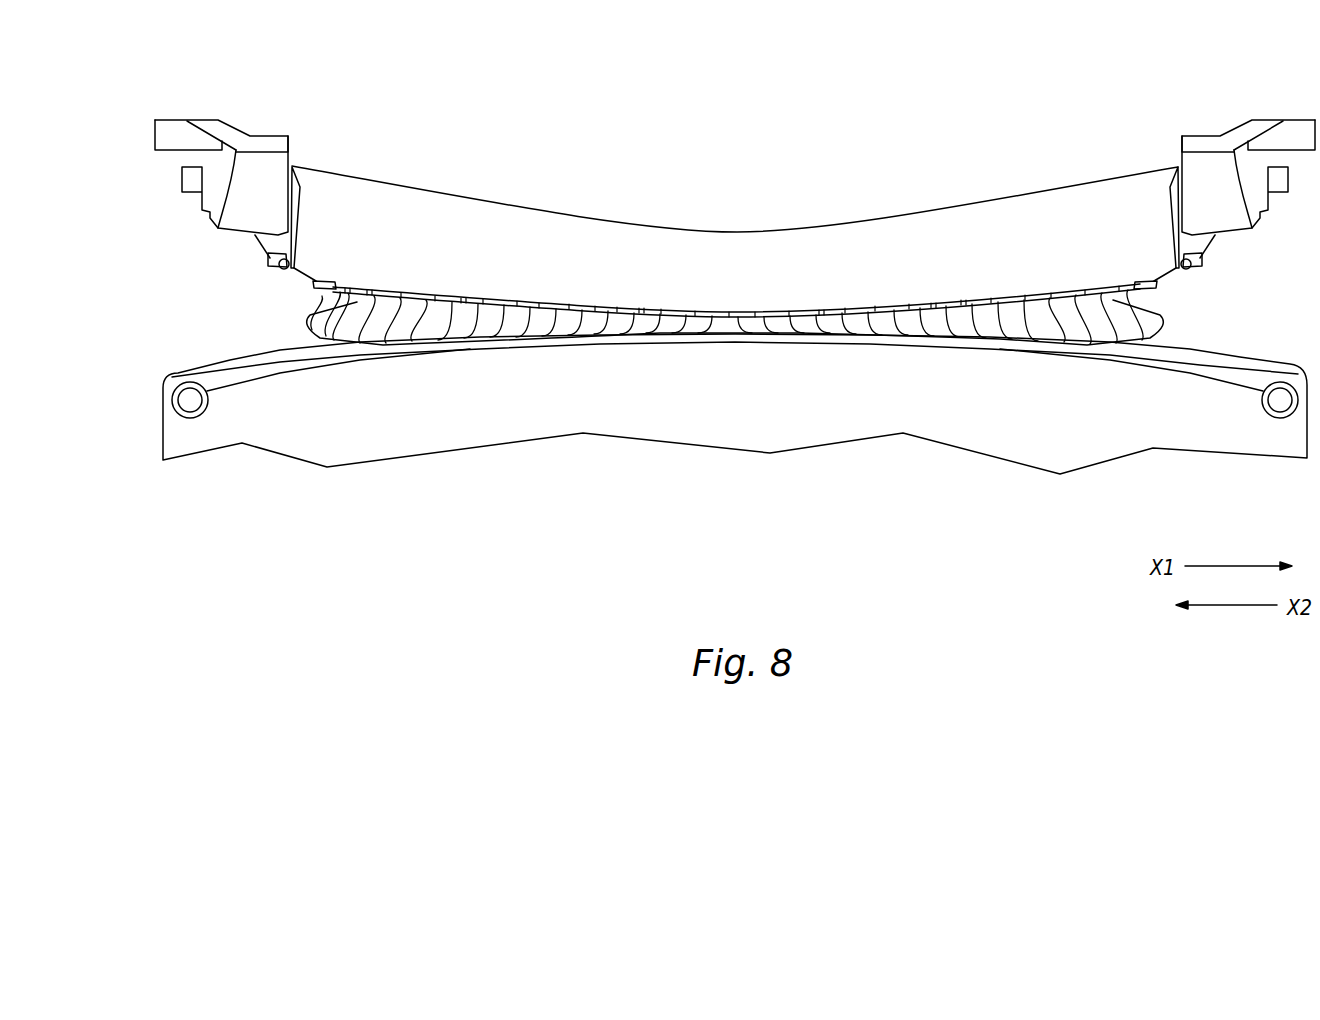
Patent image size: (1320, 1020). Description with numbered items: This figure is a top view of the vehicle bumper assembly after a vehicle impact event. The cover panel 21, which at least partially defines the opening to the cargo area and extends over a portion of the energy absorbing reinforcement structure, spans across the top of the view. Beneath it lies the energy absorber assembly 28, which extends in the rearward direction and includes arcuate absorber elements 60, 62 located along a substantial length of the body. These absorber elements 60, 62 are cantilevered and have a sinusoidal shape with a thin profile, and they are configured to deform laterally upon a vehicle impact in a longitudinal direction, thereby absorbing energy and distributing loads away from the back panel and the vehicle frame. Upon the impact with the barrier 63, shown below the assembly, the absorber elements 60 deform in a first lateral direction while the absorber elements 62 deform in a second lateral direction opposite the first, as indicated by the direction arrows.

The cover panel 21 is at (1078, 228).
The energy absorber assembly 28 is at (910, 338).
The absorber elements 60 is at (1075, 335).
The absorber elements 62 is at (340, 323).
The barrier 63 is at (692, 485).